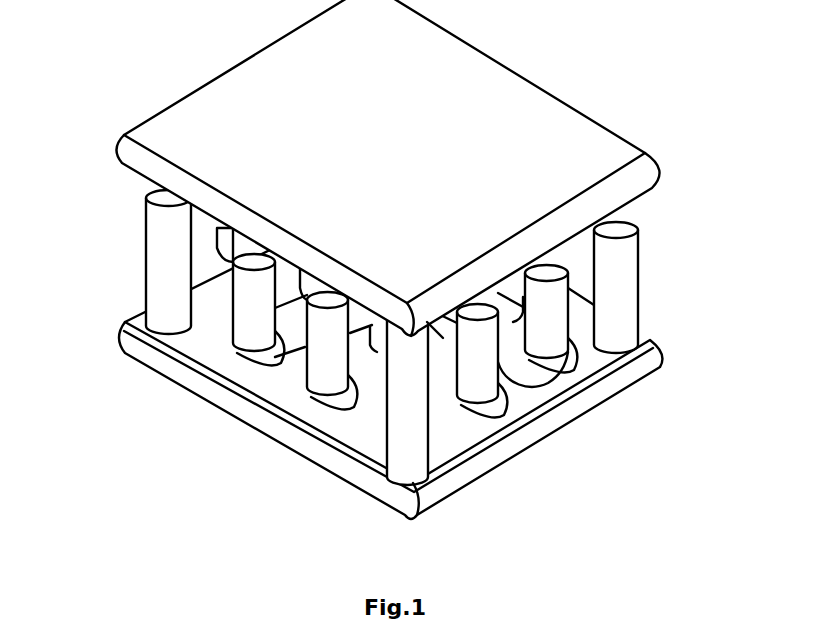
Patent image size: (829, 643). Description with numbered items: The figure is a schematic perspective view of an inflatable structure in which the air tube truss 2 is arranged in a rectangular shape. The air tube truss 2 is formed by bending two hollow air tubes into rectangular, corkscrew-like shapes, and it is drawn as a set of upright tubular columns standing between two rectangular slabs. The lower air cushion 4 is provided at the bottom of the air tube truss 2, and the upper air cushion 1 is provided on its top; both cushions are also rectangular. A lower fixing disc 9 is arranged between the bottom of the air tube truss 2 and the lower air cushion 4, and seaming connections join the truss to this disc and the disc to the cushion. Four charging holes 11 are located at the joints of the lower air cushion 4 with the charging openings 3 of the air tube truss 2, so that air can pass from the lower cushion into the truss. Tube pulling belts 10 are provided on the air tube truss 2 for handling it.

The upper air cushion 1 is at (525, 115).
The air tube truss 2 is at (622, 283).
The charging opening 3 is at (162, 340).
The lower air cushion 4 is at (558, 410).
The lower fixing disc 9 is at (487, 447).
The tube pulling belt 10 is at (442, 338).
The charging hole 11 is at (105, 397).